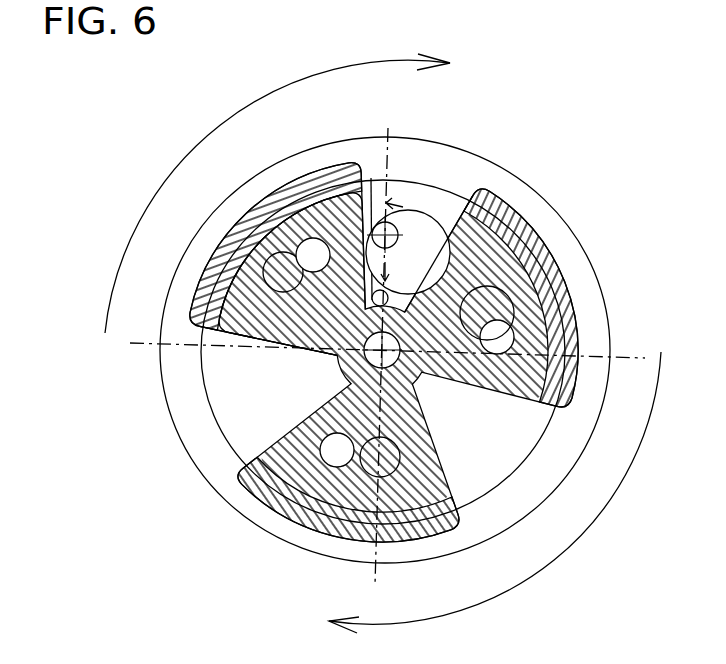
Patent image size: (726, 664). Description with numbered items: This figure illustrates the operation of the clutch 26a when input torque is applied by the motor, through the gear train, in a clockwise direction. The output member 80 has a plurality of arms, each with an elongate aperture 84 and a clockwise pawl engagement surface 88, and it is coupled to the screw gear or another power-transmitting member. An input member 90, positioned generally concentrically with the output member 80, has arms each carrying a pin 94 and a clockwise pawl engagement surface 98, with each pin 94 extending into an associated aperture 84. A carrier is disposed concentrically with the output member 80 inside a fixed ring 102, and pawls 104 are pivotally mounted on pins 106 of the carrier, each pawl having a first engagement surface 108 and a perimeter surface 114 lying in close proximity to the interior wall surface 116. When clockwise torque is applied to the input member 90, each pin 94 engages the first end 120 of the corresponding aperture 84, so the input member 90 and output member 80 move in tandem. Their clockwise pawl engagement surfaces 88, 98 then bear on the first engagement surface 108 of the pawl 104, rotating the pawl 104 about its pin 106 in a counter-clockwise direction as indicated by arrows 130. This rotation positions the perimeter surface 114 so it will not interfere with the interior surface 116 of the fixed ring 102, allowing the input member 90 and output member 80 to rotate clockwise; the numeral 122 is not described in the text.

The clutch 26a is at (94, 194).
The output member 80 is at (438, 466).
The elongate aperture 84 is at (223, 257).
The clockwise pawl engagement surface 88 is at (363, 177).
The input member 90 is at (447, 520).
The pin 94 is at (260, 222).
The clockwise pawl engagement surface 98 is at (370, 255).
The fixed ring 102 is at (291, 548).
The pawl 104 is at (556, 215).
The pin 106 is at (433, 220).
The first engagement surface 108 is at (330, 195).
The perimeter surface 114 is at (394, 230).
The interior wall surface 116 is at (454, 200).
The first end of aperture 120 is at (287, 203).
The engagement portion 122 is at (290, 268).
The arrows 130 is at (395, 290).